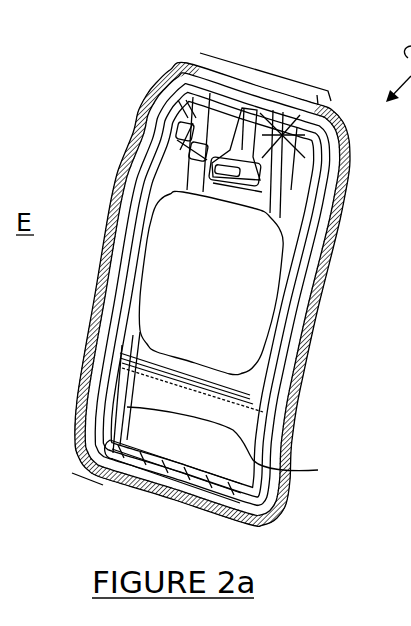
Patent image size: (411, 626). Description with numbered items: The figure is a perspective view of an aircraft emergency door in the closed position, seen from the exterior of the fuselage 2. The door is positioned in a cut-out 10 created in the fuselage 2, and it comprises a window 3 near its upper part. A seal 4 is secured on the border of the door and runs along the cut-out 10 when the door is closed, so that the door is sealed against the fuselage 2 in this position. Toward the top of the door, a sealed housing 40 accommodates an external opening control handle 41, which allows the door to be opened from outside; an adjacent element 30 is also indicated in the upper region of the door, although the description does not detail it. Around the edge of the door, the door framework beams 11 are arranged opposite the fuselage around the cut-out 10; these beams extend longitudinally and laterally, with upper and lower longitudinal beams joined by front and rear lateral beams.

The fuselage 2 is at (108, 107).
The seal 4 is at (153, 87).
The sealed housing 40 is at (257, 107).
The guide element 30 is at (187, 111).
The external opening control handle 41 is at (240, 156).
The window 3 is at (187, 242).
The cut-out 10 is at (83, 345).
The door framework beams 11 is at (187, 468).